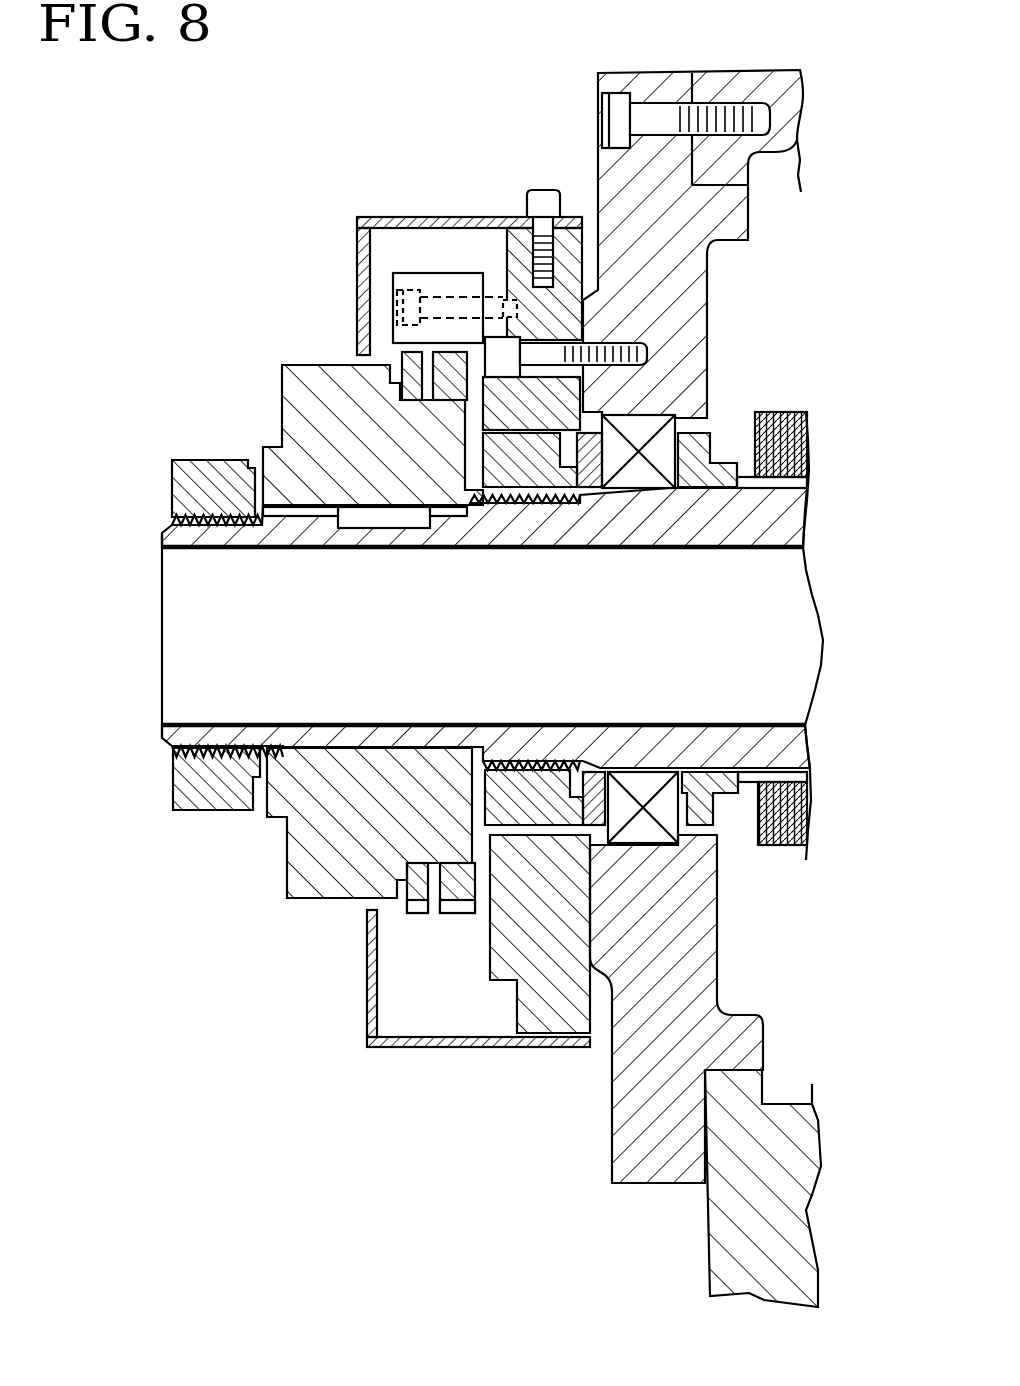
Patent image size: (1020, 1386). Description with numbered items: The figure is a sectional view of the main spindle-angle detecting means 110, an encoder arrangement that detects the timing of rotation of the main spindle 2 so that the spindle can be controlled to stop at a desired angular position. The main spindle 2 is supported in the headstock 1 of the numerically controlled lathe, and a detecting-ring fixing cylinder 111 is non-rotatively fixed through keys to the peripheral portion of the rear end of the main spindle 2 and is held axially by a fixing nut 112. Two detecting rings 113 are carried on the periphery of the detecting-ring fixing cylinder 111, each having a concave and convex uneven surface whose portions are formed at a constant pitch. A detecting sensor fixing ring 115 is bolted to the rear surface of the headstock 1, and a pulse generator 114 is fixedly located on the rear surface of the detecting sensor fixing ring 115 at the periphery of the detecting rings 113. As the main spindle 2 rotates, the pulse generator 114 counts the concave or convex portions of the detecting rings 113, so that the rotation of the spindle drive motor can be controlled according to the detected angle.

The headstock 1 is at (658, 1163).
The main spindle 2 is at (790, 513).
The main spindle-angle detecting means 110 is at (324, 252).
The detecting-ring fixing cylinder 111 is at (300, 377).
The fixing nut 112 is at (207, 470).
The detecting rings 113 is at (416, 387).
The pulse generator 114 is at (422, 277).
The detecting sensor fixing ring 115 is at (478, 227).